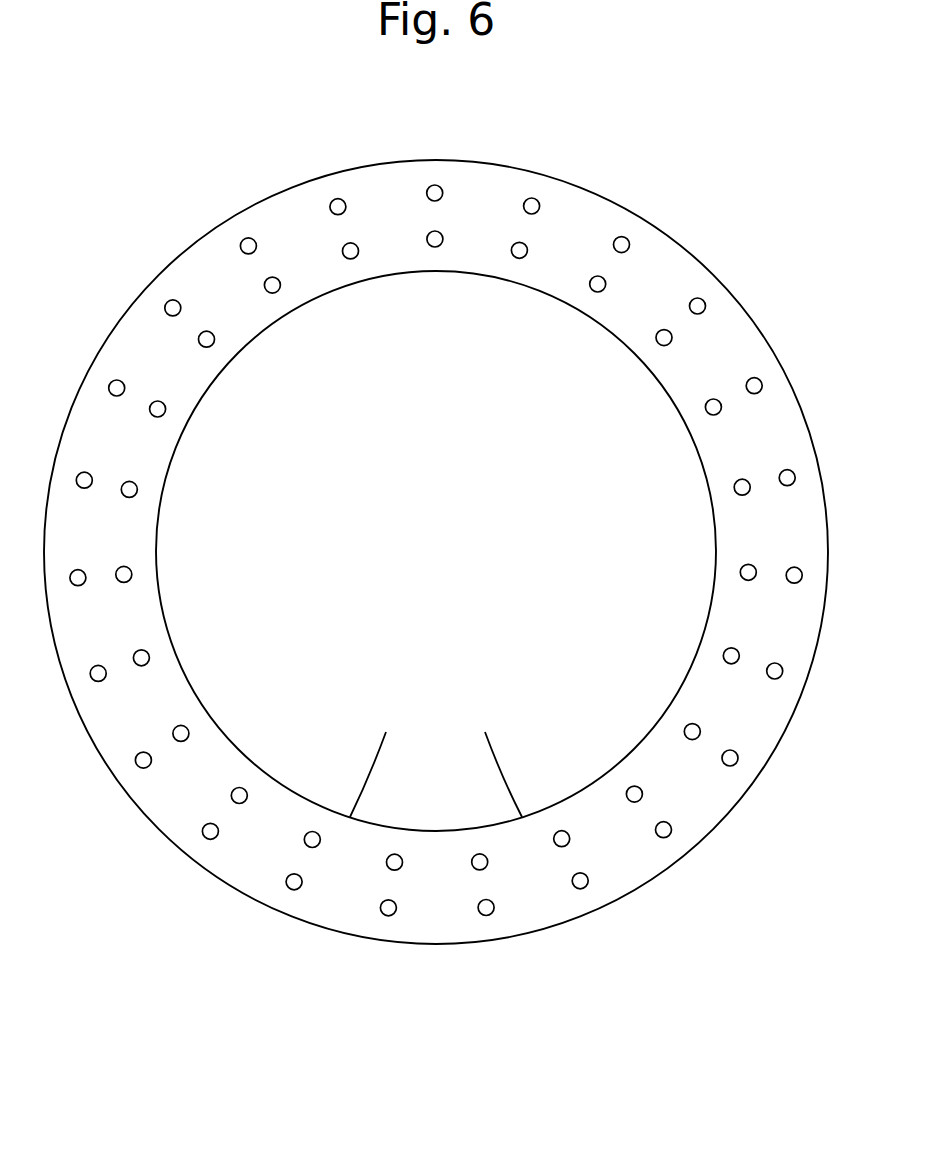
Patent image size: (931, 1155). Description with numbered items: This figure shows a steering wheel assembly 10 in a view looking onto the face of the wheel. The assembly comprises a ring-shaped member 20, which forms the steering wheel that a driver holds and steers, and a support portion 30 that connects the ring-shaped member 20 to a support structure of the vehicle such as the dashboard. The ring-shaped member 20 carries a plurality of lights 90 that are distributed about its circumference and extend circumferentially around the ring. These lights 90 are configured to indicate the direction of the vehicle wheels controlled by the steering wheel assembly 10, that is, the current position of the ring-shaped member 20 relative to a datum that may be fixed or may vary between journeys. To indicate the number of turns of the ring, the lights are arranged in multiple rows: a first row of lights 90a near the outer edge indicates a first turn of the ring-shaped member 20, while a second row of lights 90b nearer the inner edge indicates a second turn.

The steering wheel assembly 10 is at (685, 908).
The ring-shaped member 20 is at (692, 260).
The support portion 30 is at (493, 758).
The lights 90 is at (433, 183).
The first row of lights 90a is at (531, 199).
The second row of lights 90b is at (520, 258).